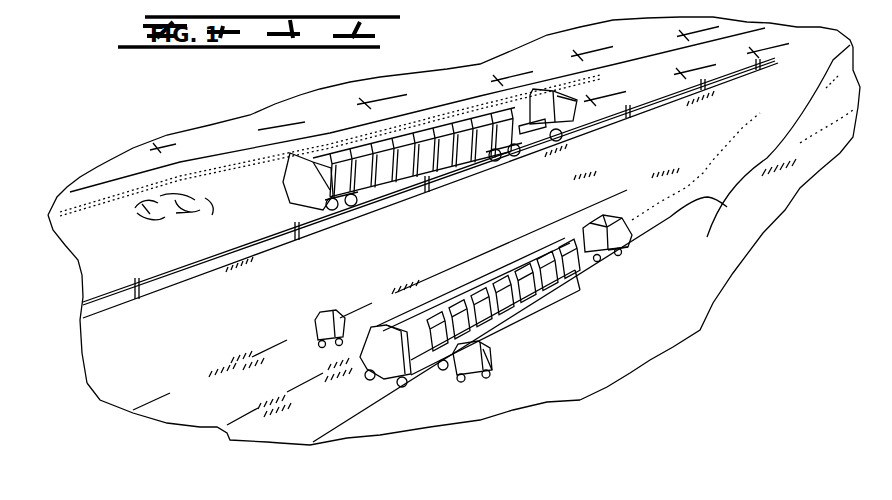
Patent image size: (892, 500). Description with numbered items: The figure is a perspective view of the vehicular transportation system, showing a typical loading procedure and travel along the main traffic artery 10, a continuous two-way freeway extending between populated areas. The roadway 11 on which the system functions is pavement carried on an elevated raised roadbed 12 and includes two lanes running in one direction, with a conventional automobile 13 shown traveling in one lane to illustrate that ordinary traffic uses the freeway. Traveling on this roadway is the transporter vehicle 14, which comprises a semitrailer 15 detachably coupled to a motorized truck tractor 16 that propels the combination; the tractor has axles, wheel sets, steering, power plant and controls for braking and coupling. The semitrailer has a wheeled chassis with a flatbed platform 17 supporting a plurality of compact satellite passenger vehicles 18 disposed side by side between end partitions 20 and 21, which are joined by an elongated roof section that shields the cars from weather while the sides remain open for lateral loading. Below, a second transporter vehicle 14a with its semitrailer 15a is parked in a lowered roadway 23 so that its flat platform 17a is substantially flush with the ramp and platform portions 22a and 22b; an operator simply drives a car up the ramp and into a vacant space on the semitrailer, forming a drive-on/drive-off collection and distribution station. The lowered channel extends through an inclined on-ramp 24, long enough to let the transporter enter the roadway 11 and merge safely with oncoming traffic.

The main traffic artery 10 is at (180, 122).
The roadway 11 is at (98, 276).
The raised roadbed 12 is at (112, 354).
The conventional automobile 13 is at (136, 207).
The transporter vehicle 14 is at (457, 196).
The transporter vehicle 14a is at (513, 300).
The semitrailer 15 is at (422, 123).
The semitrailer 15a is at (513, 323).
The motorized truck tractor 16 is at (557, 91).
The flatbed platform 17 is at (457, 133).
The flat platform 17a is at (580, 288).
The satellite passenger vehicle 18 is at (362, 179).
The end partition 20 is at (517, 112).
The end partition 21 is at (291, 194).
The ramp portion 22a is at (261, 362).
The platform portion 22b is at (500, 402).
The lowered roadway 23 is at (291, 430).
The inclined on-ramp 24 is at (717, 222).